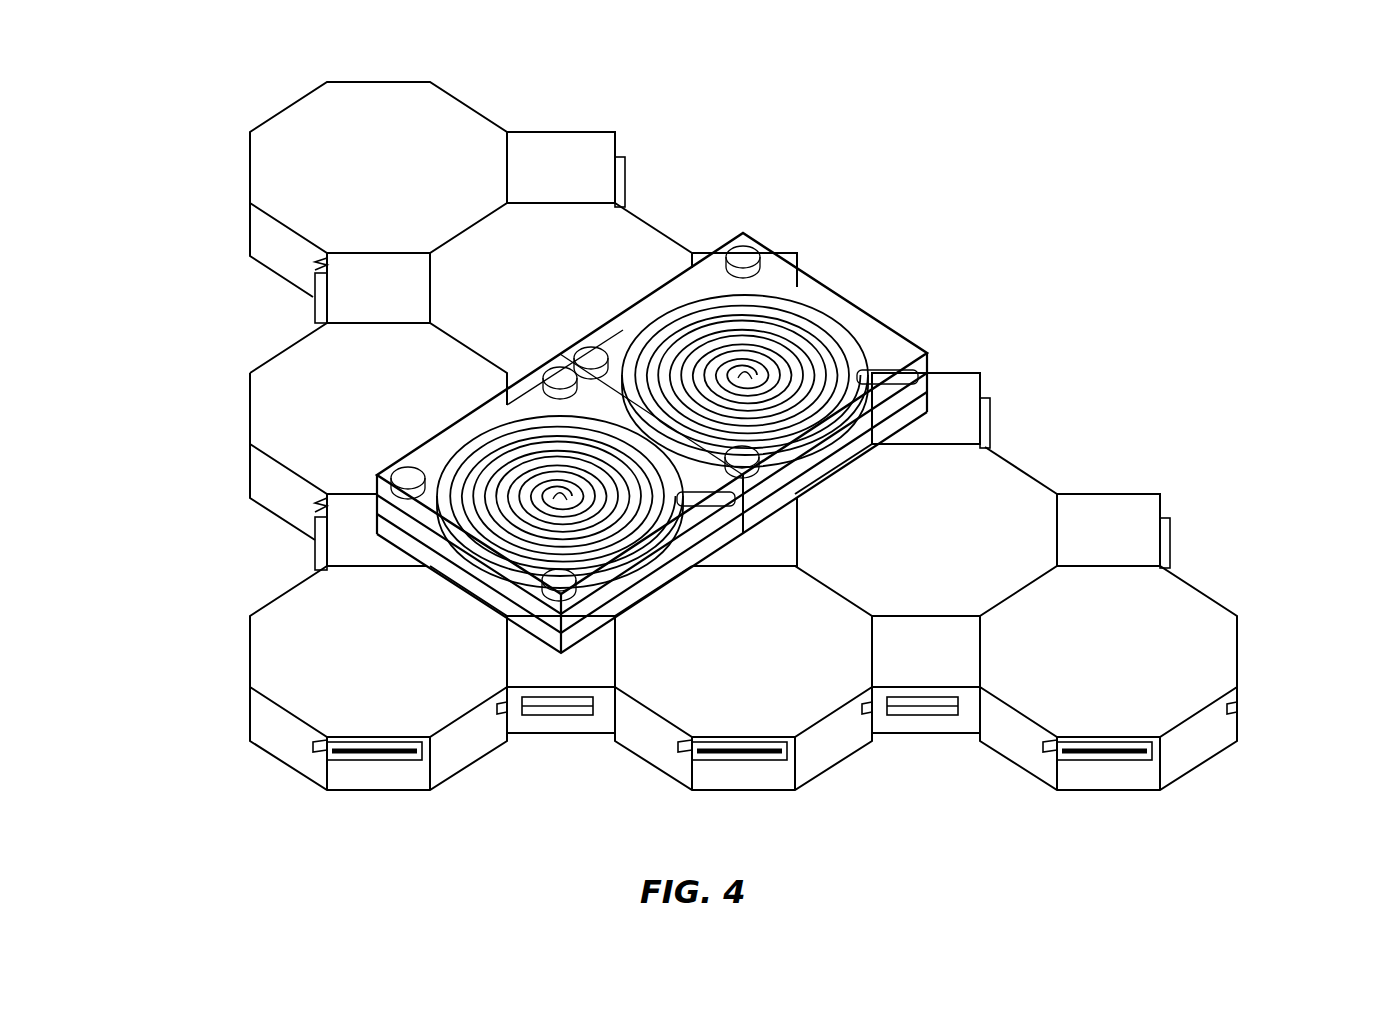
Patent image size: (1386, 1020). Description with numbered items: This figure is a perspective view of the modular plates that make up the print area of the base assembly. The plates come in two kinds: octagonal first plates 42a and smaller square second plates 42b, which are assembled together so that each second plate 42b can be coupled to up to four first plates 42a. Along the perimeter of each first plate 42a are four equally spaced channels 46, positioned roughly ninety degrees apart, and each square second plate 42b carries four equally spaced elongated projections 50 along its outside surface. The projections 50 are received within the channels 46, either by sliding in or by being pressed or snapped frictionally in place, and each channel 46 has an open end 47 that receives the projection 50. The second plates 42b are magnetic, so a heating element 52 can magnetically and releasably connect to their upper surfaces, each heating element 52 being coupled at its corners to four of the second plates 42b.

The first plate 42a is at (325, 155).
The second plate 42b is at (388, 82).
The elongated projection 50 is at (1168, 540).
The heating element 52 is at (812, 332).
The channel 46 is at (405, 755).
The open end 47 is at (303, 746).